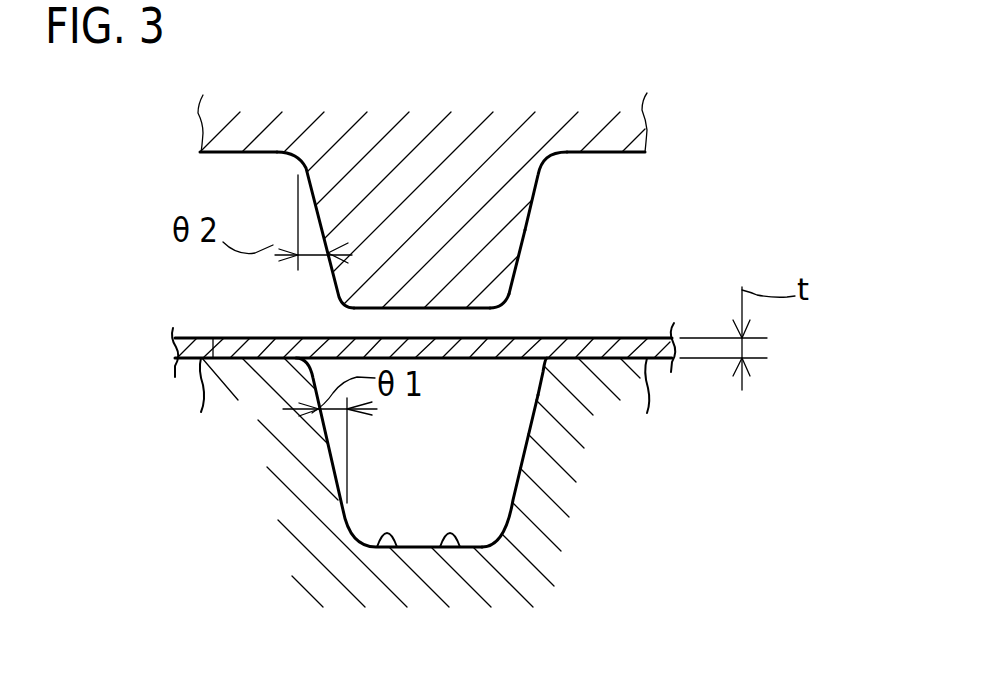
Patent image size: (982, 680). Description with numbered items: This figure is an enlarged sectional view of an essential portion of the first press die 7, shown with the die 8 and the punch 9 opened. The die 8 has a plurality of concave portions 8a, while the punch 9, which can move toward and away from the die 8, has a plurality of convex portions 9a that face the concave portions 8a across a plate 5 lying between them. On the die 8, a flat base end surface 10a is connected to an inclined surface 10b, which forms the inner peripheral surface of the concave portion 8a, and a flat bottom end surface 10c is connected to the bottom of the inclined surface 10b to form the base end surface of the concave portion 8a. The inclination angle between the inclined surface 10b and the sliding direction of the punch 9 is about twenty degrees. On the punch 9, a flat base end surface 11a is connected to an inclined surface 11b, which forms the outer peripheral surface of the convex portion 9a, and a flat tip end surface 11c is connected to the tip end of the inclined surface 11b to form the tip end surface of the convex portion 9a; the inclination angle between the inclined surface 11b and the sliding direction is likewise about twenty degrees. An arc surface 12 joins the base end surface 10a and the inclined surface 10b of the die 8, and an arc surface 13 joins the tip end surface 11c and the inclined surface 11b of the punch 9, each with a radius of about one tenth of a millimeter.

The plate 5 is at (414, 313).
The first press die 7 is at (738, 175).
The die 8 is at (445, 511).
The concave portion 8a is at (387, 540).
The punch 9 is at (452, 211).
The convex portion 9a is at (485, 282).
The base end surface 10a is at (213, 338).
The inclined surface 10b is at (520, 437).
The bottom end surface 10c is at (450, 540).
The base end surface 11a is at (615, 154).
The inclined surface 11b is at (537, 207).
The tip end surface 11c is at (367, 310).
The arc surface 12 is at (547, 360).
The arc surface 13 is at (514, 268).